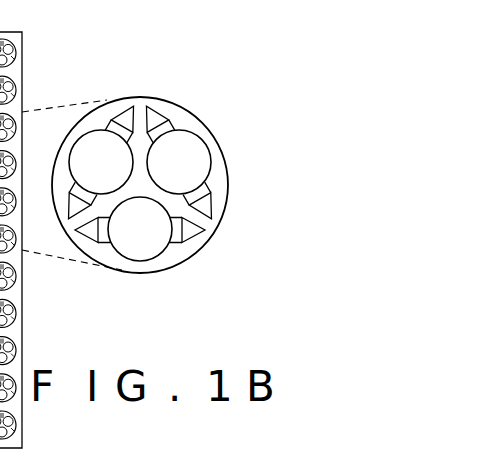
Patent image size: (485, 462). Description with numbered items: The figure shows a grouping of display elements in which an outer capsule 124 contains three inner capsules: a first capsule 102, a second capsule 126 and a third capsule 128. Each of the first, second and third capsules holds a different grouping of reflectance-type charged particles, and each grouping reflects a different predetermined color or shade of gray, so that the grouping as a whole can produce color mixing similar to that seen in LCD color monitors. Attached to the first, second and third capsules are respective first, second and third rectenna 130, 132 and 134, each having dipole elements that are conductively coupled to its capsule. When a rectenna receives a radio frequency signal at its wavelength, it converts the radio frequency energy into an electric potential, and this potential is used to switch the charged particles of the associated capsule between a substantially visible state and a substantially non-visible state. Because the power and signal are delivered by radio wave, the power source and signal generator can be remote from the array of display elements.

The first capsule 102 is at (100, 158).
The outer capsule 124 is at (173, 255).
The second capsule 126 is at (140, 233).
The third capsule 128 is at (190, 158).
The first rectenna 130 is at (77, 208).
The second rectenna 132 is at (84, 237).
The third rectenna 134 is at (158, 120).